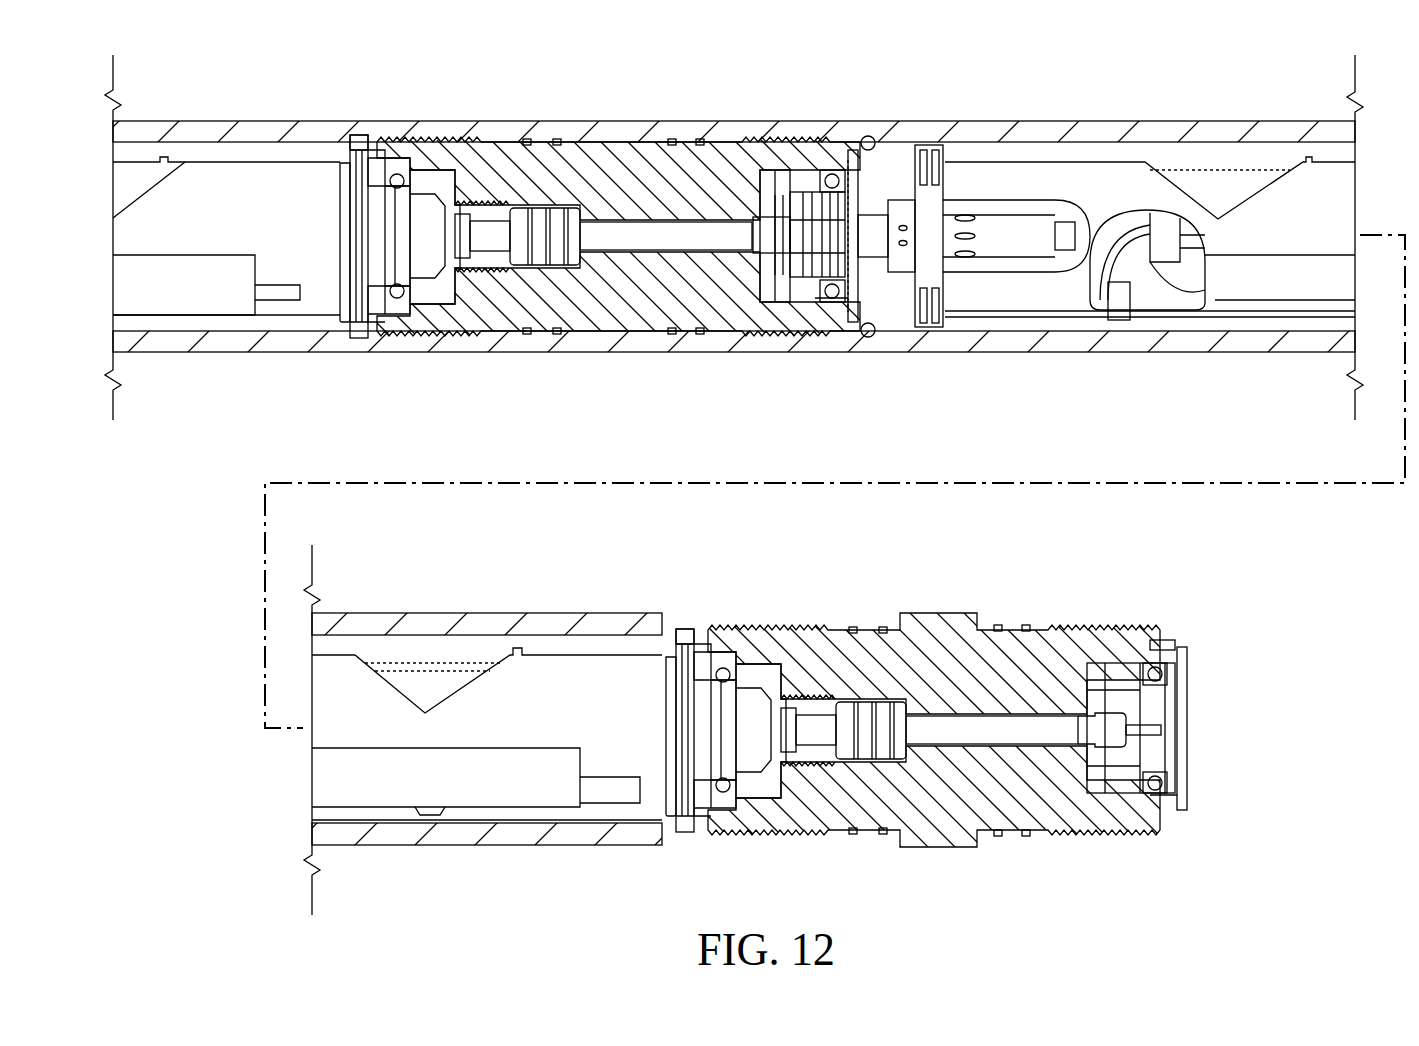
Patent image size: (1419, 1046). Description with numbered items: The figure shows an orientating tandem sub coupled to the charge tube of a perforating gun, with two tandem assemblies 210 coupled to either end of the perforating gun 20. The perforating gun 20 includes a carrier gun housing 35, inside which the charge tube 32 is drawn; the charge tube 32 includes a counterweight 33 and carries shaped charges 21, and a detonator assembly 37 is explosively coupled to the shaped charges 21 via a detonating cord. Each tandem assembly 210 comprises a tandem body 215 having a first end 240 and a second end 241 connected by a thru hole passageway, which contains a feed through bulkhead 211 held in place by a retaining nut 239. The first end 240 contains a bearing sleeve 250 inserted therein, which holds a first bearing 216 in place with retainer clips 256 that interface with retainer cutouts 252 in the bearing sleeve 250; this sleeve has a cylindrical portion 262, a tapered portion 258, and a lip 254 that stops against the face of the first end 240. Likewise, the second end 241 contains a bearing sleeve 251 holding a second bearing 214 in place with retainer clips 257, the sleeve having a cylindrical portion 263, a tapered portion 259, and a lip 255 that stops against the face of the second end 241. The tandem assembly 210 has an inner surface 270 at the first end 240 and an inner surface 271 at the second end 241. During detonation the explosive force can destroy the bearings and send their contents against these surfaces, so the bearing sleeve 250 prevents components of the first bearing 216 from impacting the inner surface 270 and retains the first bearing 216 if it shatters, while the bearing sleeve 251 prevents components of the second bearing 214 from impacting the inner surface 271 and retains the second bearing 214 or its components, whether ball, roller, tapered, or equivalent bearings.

The perforating gun 20 is at (1207, 135).
The shaped charges 21 is at (455, 690).
The charge tube 32 is at (1313, 213).
The counterweight 33 is at (515, 748).
The carrier gun housing 35 is at (1093, 128).
The detonator assembly 37 is at (1008, 240).
The tandem assembly 210 is at (640, 100).
The feed through bulkhead 211 is at (781, 507).
The second bearing 214 is at (525, 484).
The tandem body 215 is at (585, 142).
The first bearing 216 is at (800, 170).
The retaining nut 239 is at (625, 413).
The first end 240 is at (848, 132).
The second end 241 is at (518, 352).
The bearing sleeve 250 is at (866, 150).
The bearing sleeve 251 is at (471, 449).
The retainer cutouts 252 is at (1176, 735).
The lip 254 is at (872, 332).
The lip 255 is at (474, 512).
The retainer clips 256 is at (832, 172).
The retainer clips 257 is at (496, 421).
The tapered portion 258 is at (788, 296).
The tapered portion 259 is at (624, 611).
The cylindrical portion 262 is at (853, 312).
The cylindrical portion 263 is at (545, 594).
The inner surface 270 is at (828, 297).
The inner surface 271 is at (501, 483).